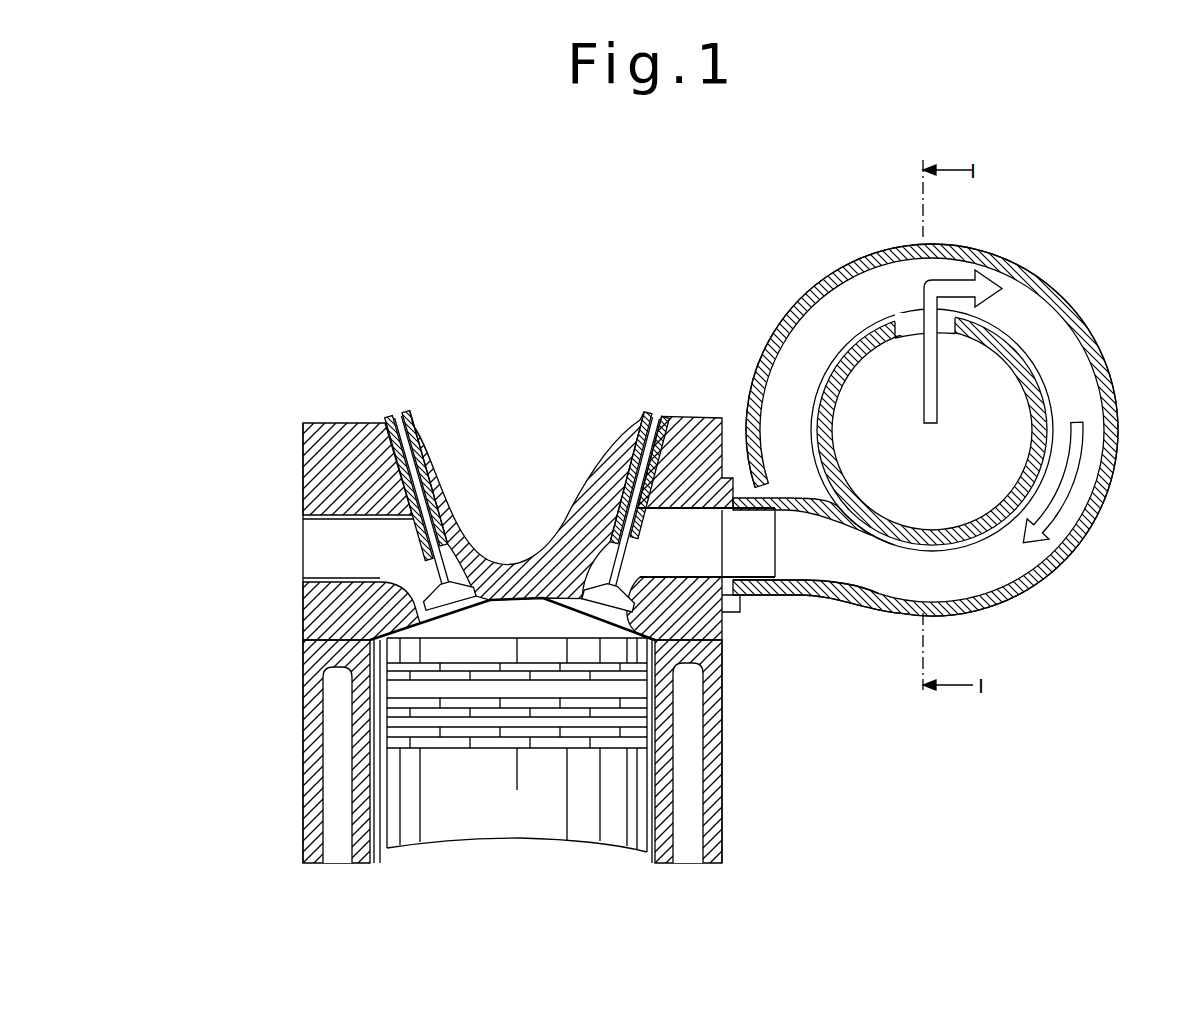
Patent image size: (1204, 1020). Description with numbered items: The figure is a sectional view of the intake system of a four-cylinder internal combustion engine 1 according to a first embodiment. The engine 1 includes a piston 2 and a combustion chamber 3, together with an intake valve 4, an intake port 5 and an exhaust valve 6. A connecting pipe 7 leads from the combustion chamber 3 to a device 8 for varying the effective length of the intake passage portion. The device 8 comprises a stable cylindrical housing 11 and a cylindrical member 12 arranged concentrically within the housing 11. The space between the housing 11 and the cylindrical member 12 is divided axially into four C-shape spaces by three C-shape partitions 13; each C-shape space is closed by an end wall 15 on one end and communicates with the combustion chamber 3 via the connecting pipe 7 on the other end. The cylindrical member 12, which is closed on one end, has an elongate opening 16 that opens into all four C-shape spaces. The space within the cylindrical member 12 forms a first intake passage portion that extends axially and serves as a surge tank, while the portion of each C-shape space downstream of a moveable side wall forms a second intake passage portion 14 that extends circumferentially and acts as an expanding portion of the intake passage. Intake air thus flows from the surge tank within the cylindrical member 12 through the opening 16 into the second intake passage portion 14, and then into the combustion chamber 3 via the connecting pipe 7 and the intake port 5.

The 4-cylinder internal combustion engine 1 is at (303, 751).
The piston 2 is at (437, 835).
The combustion chamber 3 is at (532, 623).
The intake valve 4 is at (560, 555).
The intake port 5 is at (692, 505).
The exhaust valve 6 is at (462, 530).
The connecting pipe 7 is at (740, 590).
The device for varying the effective length of intake passage portion 8 is at (1064, 294).
The cylindrical housing 11 is at (1103, 365).
The cylindrical member 12 is at (1030, 420).
The C-shape partition 13 is at (848, 553).
The second intake passage portion 14 is at (1018, 310).
The end wall 15 is at (787, 497).
The elongate opening 16 is at (905, 330).